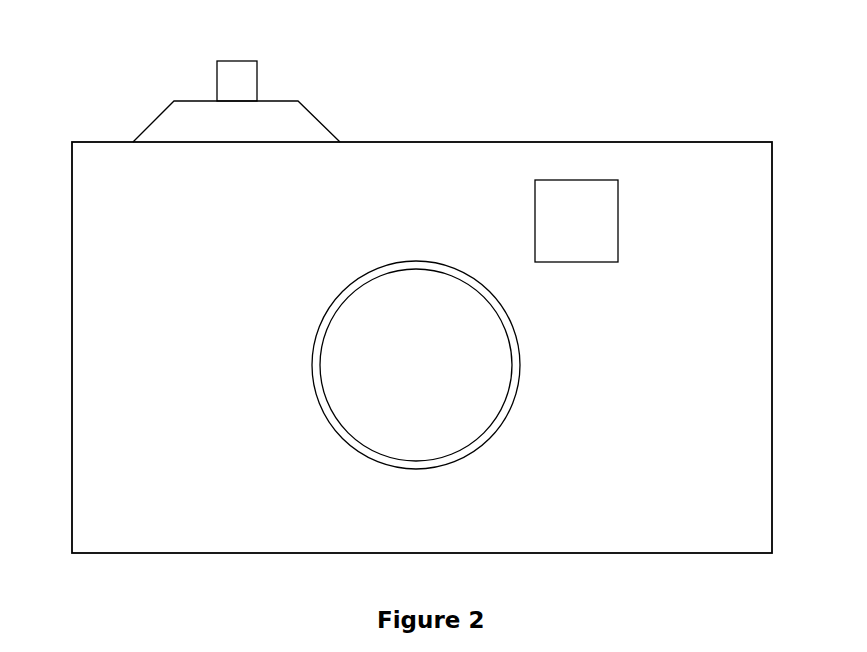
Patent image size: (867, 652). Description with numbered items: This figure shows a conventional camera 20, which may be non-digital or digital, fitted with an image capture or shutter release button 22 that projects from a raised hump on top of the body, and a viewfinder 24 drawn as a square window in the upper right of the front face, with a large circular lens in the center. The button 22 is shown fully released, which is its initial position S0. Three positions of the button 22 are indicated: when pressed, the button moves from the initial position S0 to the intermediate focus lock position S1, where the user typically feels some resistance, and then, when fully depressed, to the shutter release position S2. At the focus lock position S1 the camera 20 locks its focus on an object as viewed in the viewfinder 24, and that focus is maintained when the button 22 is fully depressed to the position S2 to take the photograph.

The camera 20 is at (722, 133).
The image capture button 22 is at (260, 65).
The viewfinder 24 is at (602, 198).
The initial position S0 is at (205, 61).
The focus lock position S1 is at (200, 81).
The shutter release position S2 is at (158, 101).